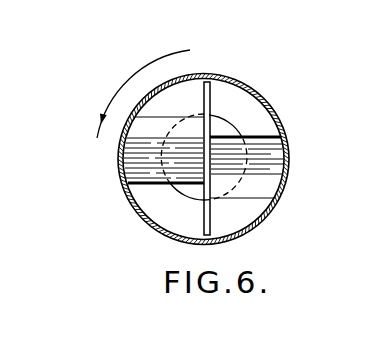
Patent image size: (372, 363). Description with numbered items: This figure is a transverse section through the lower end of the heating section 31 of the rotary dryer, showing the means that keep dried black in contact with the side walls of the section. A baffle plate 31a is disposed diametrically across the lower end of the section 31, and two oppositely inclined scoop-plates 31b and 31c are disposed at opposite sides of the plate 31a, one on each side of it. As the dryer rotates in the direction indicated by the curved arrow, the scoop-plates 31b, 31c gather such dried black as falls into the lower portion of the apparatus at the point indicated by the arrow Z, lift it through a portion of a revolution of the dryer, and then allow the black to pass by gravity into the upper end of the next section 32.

The heating section 31 is at (124, 183).
The baffle plate 31a is at (209, 110).
The scoop-plate 31b is at (172, 140).
The scoop-plate 31c is at (243, 180).
The section 32 is at (233, 129).
The point indicated by arrow Z is at (188, 219).